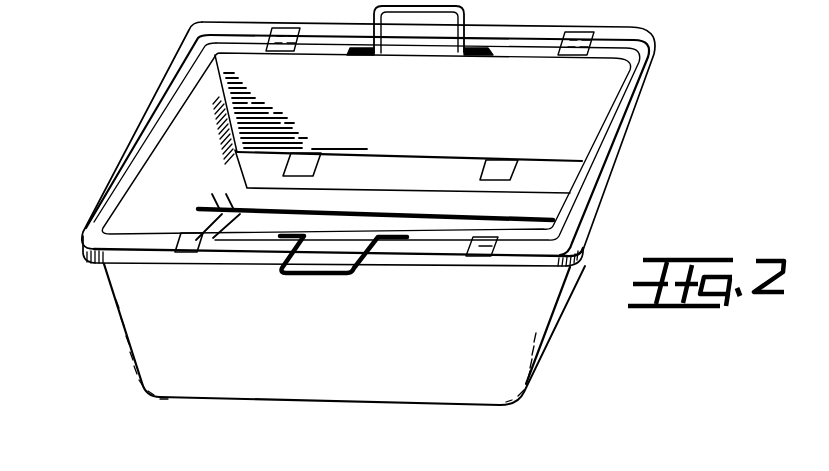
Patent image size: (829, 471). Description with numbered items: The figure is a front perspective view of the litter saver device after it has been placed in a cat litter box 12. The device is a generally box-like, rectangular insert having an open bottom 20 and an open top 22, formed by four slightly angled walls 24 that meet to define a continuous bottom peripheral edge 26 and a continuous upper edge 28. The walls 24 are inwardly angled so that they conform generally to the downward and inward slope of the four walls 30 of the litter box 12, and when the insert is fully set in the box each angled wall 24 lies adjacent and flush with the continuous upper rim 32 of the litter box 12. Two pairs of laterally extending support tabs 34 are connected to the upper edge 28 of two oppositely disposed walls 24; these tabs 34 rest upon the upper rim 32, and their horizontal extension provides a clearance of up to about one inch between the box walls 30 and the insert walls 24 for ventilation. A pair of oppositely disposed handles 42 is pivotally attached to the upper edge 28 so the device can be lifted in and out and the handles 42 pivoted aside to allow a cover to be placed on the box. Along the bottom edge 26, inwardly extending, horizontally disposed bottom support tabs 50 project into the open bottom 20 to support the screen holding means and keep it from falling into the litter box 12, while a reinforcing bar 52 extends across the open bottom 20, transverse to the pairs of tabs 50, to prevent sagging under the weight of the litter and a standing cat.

The cat litter box 12 is at (129, 367).
The open bottom 20 is at (383, 195).
The open top 22 is at (167, 218).
The angled walls 24 is at (235, 65).
The bottom peripheral edge 26 is at (373, 159).
The upper edge 28 is at (612, 92).
The walls of the litter box 30 is at (491, 379).
The upper rim 32 is at (93, 217).
The support tabs 34 is at (288, 52).
The handles 42 is at (397, 10).
The bottom support tabs 50 is at (290, 177).
The reinforcing bar 52 is at (399, 211).